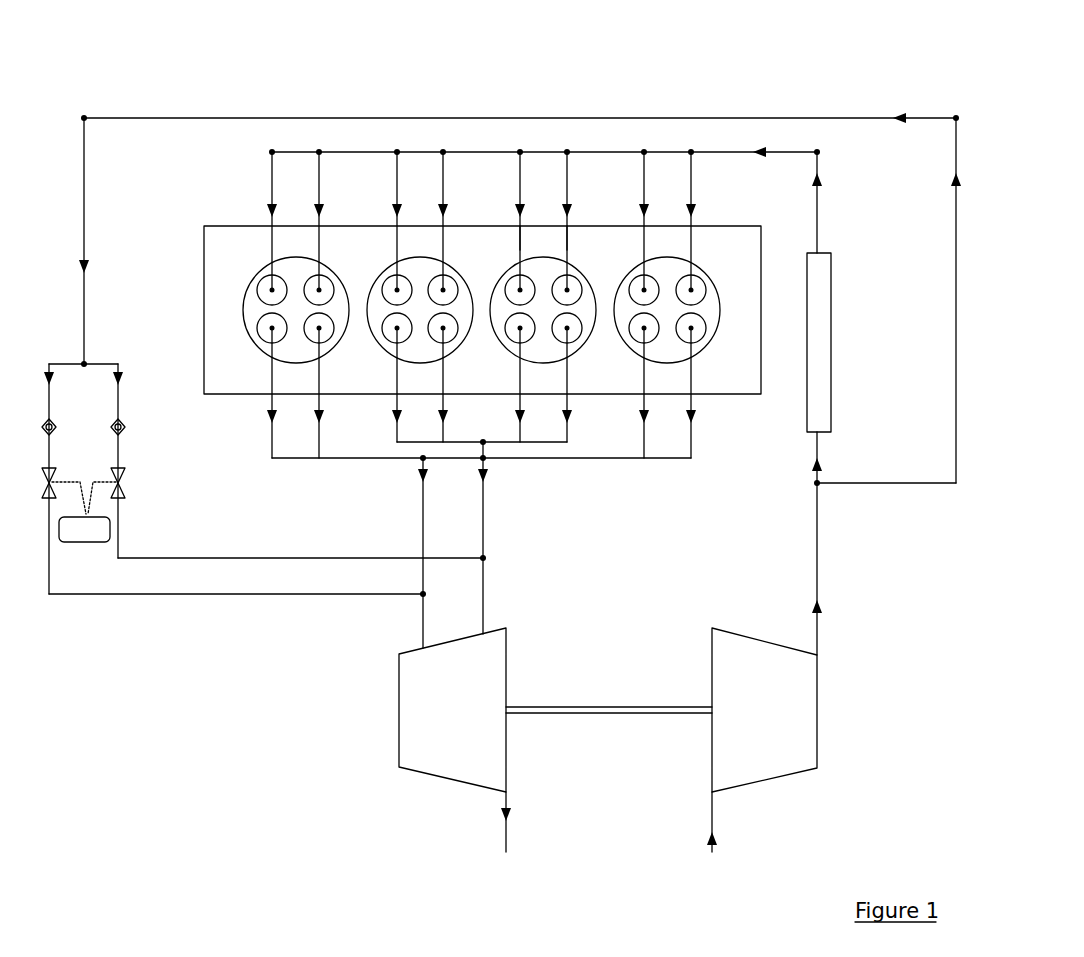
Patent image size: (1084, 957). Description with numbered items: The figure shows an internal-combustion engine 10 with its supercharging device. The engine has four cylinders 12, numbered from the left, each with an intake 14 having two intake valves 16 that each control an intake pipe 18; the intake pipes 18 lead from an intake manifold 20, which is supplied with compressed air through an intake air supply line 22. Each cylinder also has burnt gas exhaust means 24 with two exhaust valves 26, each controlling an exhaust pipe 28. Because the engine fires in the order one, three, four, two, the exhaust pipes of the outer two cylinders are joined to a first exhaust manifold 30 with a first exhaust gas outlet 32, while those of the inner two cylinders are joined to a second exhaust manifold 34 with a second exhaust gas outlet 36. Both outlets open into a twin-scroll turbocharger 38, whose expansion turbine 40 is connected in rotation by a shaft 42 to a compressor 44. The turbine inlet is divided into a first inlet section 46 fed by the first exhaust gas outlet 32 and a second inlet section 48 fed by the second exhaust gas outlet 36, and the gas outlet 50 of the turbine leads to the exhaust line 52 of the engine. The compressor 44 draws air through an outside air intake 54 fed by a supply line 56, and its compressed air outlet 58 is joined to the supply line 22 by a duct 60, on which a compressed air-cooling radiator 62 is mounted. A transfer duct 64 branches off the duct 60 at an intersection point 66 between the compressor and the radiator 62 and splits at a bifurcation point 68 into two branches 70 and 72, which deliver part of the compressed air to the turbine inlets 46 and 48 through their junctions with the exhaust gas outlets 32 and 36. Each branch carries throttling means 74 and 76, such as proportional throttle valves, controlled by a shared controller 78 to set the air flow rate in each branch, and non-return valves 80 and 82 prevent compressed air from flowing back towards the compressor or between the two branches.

The internal-combustion engine 10 is at (202, 212).
The cylinders 12 is at (243, 312).
The intake 14 is at (338, 204).
The intake valve 16 is at (441, 277).
The intake pipe 18 is at (565, 244).
The intake manifold 20 is at (480, 152).
The intake air supply line 22 is at (795, 152).
The burnt gas exhaust means 24 is at (718, 410).
The exhaust valve 26 is at (558, 340).
The exhaust pipe 28 is at (443, 346).
The first exhaust manifold 30 is at (357, 460).
The first exhaust gas outlet 32 is at (422, 544).
The second exhaust manifold 34 is at (548, 450).
The second exhaust gas outlet 36 is at (485, 527).
The turbocharger 38 is at (620, 716).
The expansion turbine 40 is at (390, 778).
The shaft 42 is at (662, 718).
The compressor 44 is at (786, 780).
The first inlet section 46 is at (420, 652).
The second inlet section 48 is at (478, 642).
The gas outlet 50 is at (506, 785).
The exhaust line 52 is at (506, 846).
The outside air intake 54 is at (713, 782).
The supply line 56 is at (712, 850).
The compressed air outlet 58 is at (816, 655).
The duct 60 is at (820, 580).
The compressed air-cooling radiator 62 is at (832, 386).
The transfer duct 64 is at (955, 370).
The intersection point 66 is at (816, 484).
The bifurcation point 68 is at (86, 362).
The branch 70 is at (52, 565).
The branch 72 is at (120, 546).
The throttling means 74 is at (54, 470).
The throttling means 76 is at (123, 496).
The controller 78 is at (84, 512).
The non-return valve 80 is at (54, 425).
The non-return valve 82 is at (122, 428).